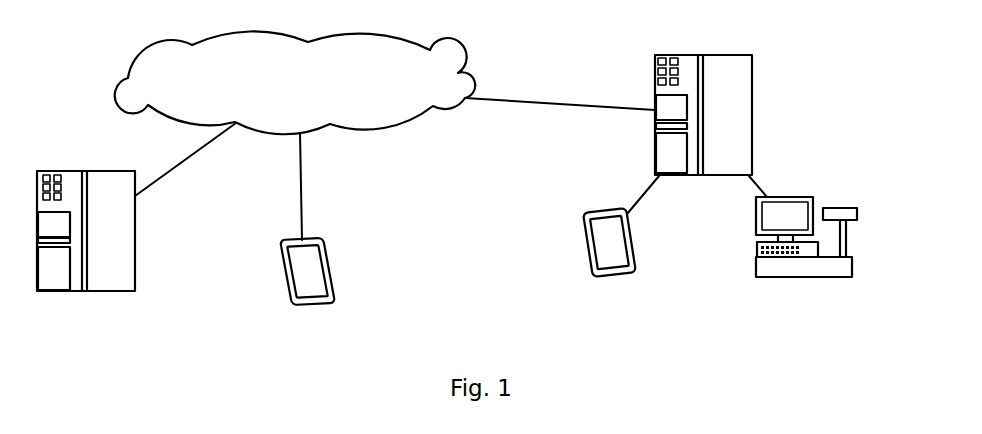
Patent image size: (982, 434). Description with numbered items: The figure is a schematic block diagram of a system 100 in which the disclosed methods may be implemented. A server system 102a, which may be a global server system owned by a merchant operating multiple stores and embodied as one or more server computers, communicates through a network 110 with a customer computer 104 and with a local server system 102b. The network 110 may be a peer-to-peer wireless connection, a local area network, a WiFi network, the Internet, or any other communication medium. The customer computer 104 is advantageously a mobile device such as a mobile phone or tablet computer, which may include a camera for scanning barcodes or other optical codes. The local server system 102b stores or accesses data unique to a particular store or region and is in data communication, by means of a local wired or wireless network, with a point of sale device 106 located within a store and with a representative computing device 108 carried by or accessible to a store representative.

The system 100 is at (78, 82).
The network 110 is at (340, 90).
The server system 102a is at (96, 225).
The local server system 102b is at (714, 110).
The customer computer 104 is at (284, 265).
The point of sale device 106 is at (775, 224).
The representative computing device 108 is at (590, 247).